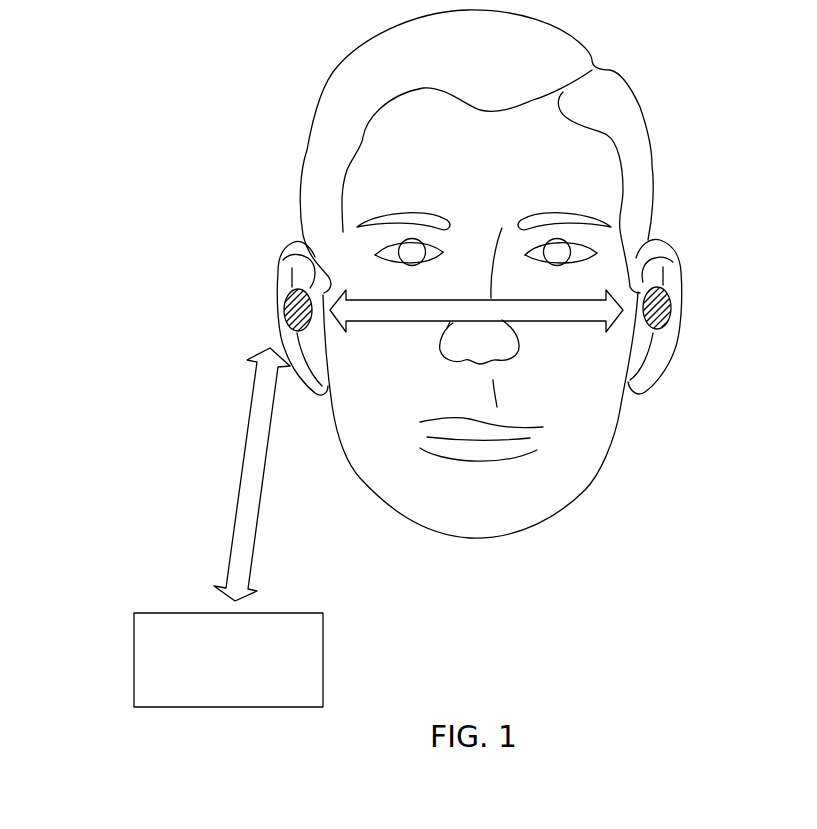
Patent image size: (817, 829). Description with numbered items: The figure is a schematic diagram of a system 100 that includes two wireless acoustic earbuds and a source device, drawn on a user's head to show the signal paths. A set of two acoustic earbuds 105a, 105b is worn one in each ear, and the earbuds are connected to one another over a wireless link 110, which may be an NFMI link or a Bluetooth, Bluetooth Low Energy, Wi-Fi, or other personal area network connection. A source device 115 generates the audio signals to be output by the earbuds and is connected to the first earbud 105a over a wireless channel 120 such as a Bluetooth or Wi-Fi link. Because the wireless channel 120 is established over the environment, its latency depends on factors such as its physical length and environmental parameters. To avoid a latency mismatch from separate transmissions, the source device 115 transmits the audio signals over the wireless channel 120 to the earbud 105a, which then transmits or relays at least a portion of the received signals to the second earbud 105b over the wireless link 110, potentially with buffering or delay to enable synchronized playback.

The system 100 is at (185, 70).
The acoustic earbud 105a is at (284, 292).
The acoustic earbud 105b is at (677, 294).
The wireless link 110 is at (553, 321).
The source device 115 is at (248, 686).
The wireless channel 120 is at (245, 453).